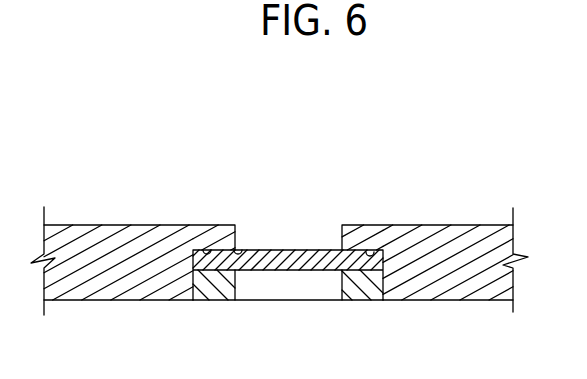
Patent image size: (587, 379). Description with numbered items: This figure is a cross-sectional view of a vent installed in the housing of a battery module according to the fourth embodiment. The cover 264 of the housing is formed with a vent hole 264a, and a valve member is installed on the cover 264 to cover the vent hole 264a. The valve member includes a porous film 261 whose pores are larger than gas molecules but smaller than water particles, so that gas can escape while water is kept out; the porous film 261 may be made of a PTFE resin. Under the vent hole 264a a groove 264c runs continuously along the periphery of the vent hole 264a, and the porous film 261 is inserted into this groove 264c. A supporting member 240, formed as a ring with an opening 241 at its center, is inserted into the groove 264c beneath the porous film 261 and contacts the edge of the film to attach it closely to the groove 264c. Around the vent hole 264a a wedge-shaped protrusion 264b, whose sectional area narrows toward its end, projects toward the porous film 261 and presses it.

The cover 264 is at (432, 245).
The vent hole 264a is at (296, 225).
The protrusion 264b is at (241, 252).
The groove 264c is at (374, 252).
The porous film 261 is at (207, 249).
The supporting member 240 is at (212, 290).
The opening 241 is at (295, 278).